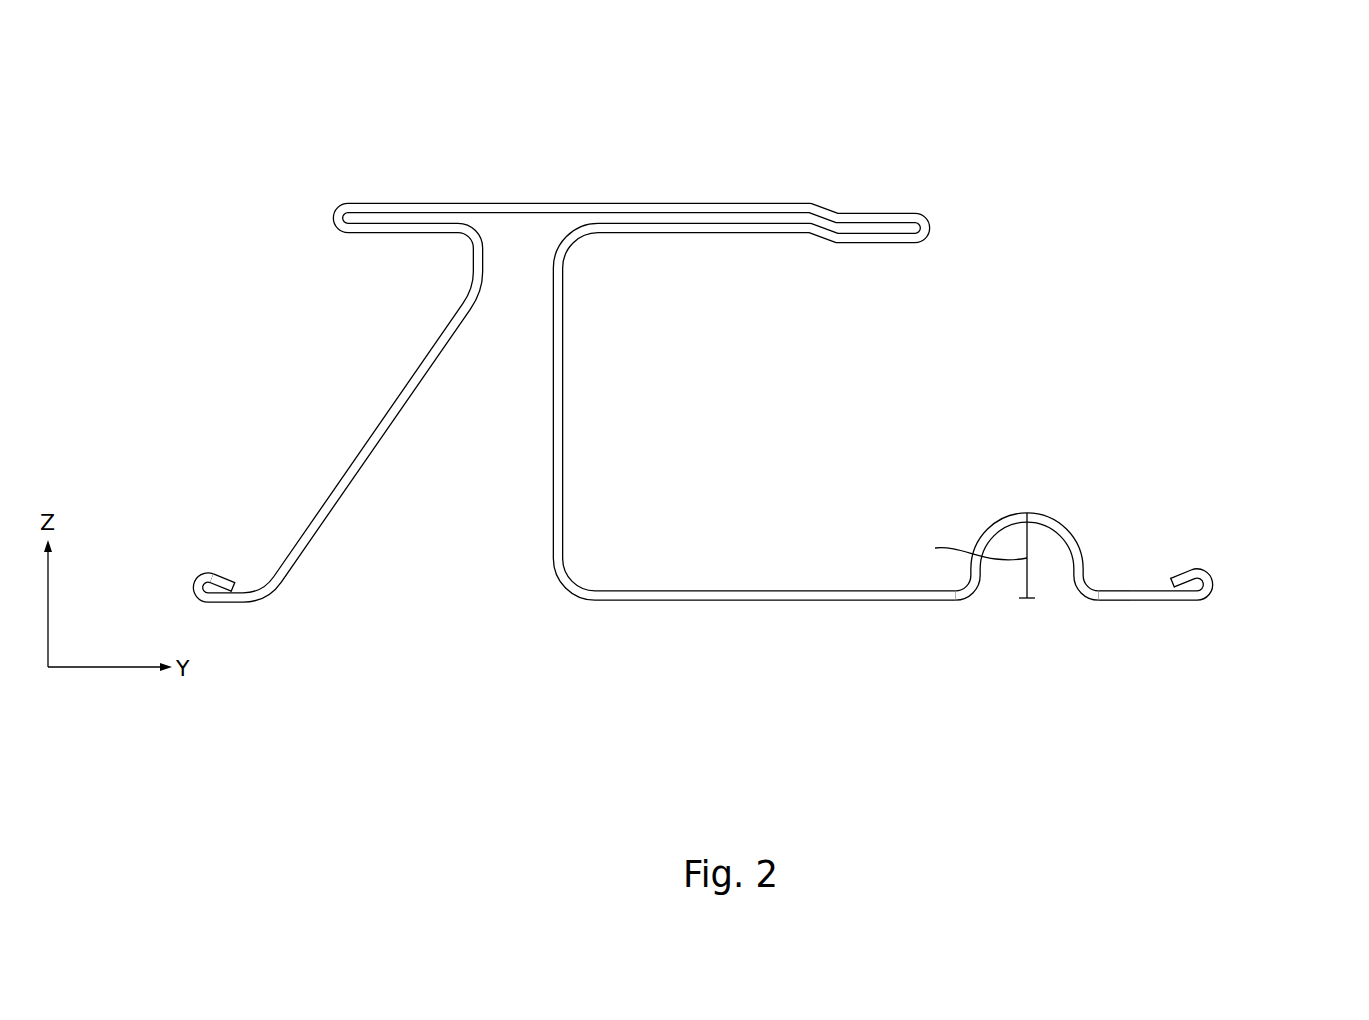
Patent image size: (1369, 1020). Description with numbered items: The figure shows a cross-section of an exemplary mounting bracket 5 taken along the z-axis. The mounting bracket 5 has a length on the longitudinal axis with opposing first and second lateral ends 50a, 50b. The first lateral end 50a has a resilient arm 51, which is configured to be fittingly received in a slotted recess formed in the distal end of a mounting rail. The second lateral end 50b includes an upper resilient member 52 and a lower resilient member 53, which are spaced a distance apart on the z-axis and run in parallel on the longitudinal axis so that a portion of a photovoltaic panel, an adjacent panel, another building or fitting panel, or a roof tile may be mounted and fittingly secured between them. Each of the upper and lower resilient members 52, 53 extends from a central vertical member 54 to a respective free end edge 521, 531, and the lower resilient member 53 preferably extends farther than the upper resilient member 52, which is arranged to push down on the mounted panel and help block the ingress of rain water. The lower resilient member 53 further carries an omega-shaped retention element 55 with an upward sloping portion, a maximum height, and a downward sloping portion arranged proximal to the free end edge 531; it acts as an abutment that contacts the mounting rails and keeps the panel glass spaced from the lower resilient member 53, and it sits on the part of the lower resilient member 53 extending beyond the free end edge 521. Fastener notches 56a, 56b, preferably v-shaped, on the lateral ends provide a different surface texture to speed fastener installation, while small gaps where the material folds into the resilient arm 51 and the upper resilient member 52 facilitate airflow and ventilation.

The mounting bracket 5 is at (812, 70).
The resilient arm 51 is at (336, 212).
The upper resilient member 52 is at (955, 186).
The free end edge 521 is at (920, 244).
The first lateral end 50a is at (200, 455).
The second lateral end 50b is at (1213, 455).
The central vertical member 54 is at (564, 412).
The lower resilient member 53 is at (738, 602).
The retention element 55 is at (1140, 612).
The fastener notch 56a is at (257, 603).
The fastener notch 56b is at (1113, 590).
The free end edge 531 is at (1245, 575).